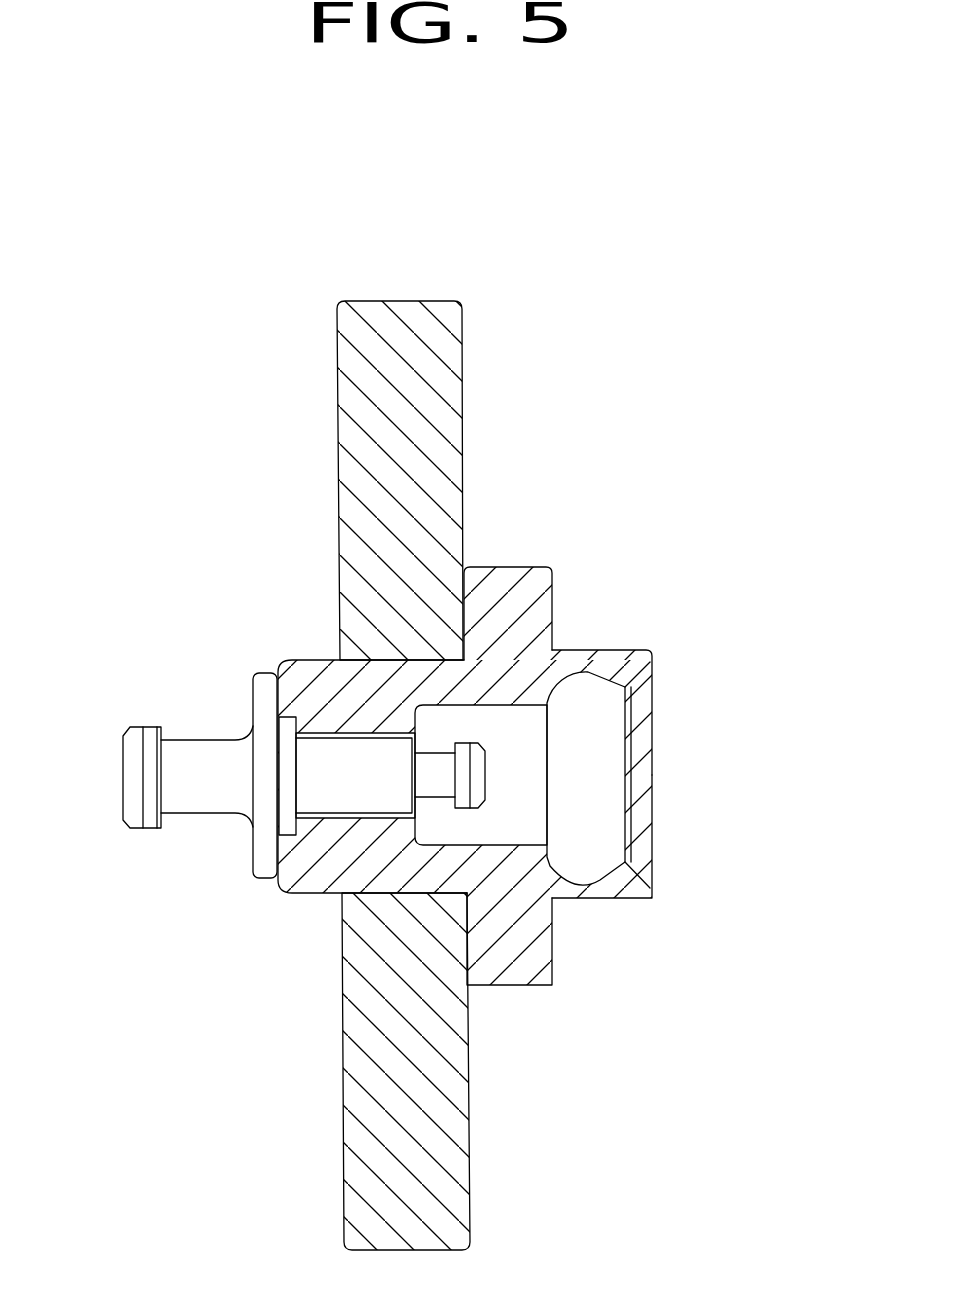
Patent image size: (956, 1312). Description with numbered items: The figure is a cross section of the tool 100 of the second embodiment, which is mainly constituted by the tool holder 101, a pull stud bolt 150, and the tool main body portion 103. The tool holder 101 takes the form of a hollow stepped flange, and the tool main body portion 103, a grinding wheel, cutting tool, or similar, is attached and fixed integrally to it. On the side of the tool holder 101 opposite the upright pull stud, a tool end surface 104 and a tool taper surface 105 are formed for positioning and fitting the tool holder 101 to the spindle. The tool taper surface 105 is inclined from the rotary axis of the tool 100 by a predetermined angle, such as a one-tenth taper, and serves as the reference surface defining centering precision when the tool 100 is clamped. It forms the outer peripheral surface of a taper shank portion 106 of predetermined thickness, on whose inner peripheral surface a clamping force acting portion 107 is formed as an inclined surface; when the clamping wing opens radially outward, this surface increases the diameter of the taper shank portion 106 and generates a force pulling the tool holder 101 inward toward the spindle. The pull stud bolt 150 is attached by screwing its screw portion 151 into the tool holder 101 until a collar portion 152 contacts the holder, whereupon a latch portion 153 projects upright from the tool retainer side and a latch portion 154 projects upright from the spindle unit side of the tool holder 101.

The tool 100 is at (512, 346).
The tool holder 101 is at (503, 584).
The tool main body portion 103 is at (342, 352).
The tool end surface 104 is at (555, 613).
The tool taper surface 105 is at (628, 650).
The taper shank portion 106 is at (607, 900).
The clamping force acting portion 107 is at (607, 868).
The pull stud bolt 150 is at (194, 757).
The screw portion 151 is at (331, 755).
The collar portion 152 is at (262, 872).
The latch portion 153 is at (160, 826).
The latch portion 154 is at (453, 745).